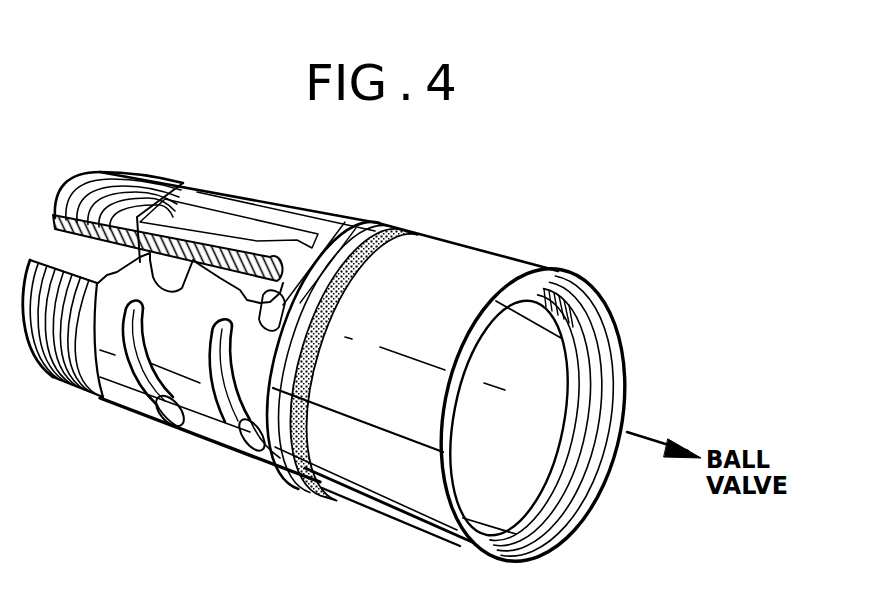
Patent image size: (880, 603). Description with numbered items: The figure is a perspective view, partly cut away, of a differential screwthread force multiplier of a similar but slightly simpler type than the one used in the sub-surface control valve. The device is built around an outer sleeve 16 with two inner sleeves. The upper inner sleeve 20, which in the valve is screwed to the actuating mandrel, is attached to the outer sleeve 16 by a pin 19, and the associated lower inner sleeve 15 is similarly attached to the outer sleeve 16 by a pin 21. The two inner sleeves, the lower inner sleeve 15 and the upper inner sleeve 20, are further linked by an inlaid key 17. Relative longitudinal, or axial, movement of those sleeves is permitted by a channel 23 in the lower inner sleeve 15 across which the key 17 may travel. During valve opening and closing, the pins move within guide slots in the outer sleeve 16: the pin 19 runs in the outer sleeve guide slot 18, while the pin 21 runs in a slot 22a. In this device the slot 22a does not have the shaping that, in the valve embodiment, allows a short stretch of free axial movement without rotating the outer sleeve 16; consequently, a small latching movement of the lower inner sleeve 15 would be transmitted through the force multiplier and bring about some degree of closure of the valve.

The lower inner sleeve 15 is at (128, 170).
The outer sleeve 16 is at (190, 300).
The inlaid key 17 is at (258, 240).
The outer sleeve guide slot 18 is at (230, 413).
The pin 19 is at (368, 224).
The upper inner sleeve 20 is at (467, 263).
The pin 21 is at (180, 433).
The slot 22a is at (140, 355).
The channel 23 is at (203, 229).